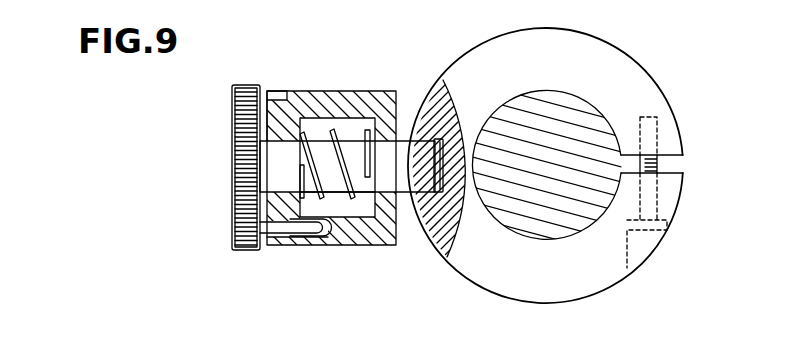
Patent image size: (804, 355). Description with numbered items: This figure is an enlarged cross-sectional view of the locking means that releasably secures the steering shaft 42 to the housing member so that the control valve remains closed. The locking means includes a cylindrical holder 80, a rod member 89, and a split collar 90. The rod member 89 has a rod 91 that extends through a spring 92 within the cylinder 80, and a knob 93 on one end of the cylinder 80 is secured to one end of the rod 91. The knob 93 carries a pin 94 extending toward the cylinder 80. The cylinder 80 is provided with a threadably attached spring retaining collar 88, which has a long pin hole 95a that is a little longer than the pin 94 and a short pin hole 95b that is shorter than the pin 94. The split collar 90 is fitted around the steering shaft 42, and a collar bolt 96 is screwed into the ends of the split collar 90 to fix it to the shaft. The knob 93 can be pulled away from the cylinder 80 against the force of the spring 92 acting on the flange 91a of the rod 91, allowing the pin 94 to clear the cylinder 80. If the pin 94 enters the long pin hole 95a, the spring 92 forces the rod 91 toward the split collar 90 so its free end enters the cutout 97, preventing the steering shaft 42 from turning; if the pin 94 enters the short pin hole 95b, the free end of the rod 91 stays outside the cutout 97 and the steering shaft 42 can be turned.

The steering shaft 42 is at (579, 98).
The cylindrical holder 80 is at (375, 246).
The spring retaining collar 88 is at (287, 125).
The rod member 89 is at (204, 186).
The split collar 90 is at (587, 299).
The rod 91 is at (408, 194).
The flange 91a is at (368, 207).
The spring 92 is at (330, 118).
The knob 93 is at (243, 252).
The pin 94 is at (281, 234).
The long pin hole 95a is at (318, 246).
The short pin hole 95b is at (278, 101).
The collar bolt 96 is at (663, 231).
The cutout 97 is at (434, 126).